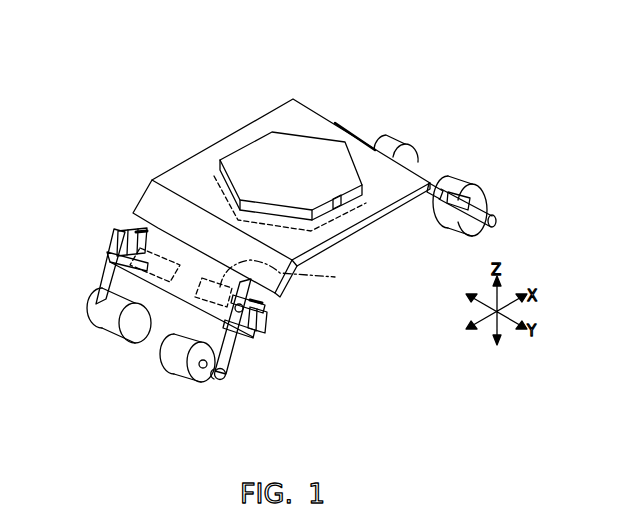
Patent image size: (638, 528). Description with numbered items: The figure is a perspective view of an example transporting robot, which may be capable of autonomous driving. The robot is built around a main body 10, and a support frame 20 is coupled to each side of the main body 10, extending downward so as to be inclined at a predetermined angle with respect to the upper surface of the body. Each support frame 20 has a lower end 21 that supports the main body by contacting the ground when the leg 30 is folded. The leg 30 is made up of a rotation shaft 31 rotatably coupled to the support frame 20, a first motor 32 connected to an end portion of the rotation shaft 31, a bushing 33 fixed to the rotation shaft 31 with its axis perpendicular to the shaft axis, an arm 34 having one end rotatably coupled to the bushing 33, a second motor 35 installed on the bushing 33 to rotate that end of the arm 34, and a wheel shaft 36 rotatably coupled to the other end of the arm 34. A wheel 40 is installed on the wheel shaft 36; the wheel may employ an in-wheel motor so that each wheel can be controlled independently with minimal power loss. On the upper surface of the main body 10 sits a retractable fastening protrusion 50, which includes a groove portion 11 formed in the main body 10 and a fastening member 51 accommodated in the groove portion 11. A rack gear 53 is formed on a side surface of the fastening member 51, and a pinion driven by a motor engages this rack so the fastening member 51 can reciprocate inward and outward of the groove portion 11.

The main body 10 is at (175, 178).
The groove portion 11 is at (221, 186).
The support frame 20 is at (170, 276).
The lower end 21 is at (137, 346).
The leg 30 is at (204, 302).
The rotation shaft 31 is at (282, 293).
The first motor 32 is at (277, 283).
The bushing 33 is at (268, 318).
The arm 34 is at (235, 355).
The second motor 35 is at (272, 330).
The wheel shaft 36 is at (227, 376).
The wheel 40 is at (178, 385).
The fastening protrusion 50 is at (358, 126).
The fastening member 51 is at (306, 145).
The rack gear 53 is at (342, 205).